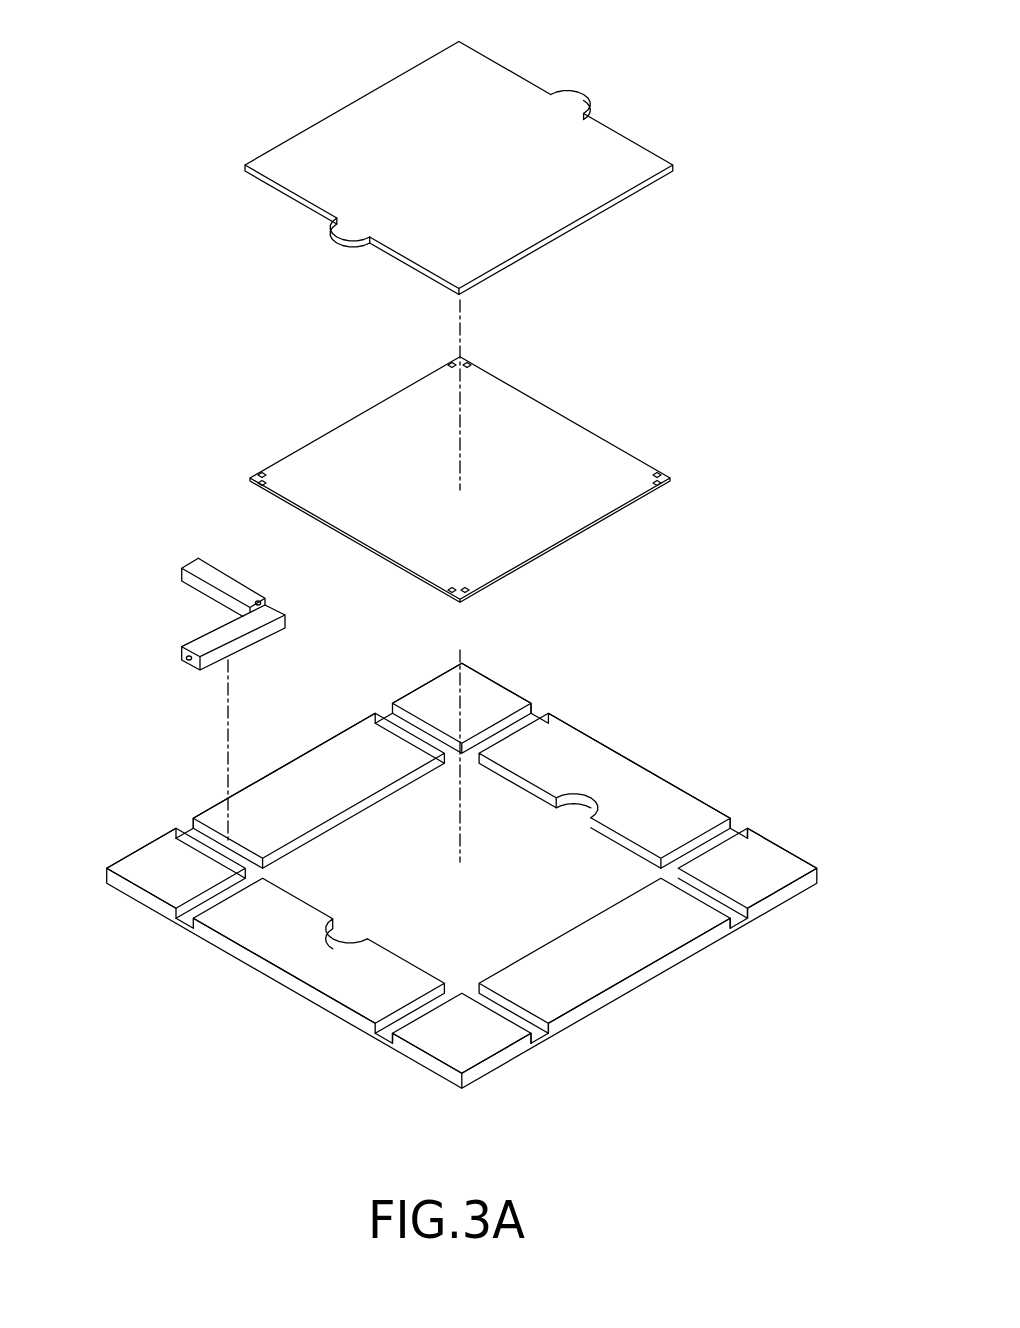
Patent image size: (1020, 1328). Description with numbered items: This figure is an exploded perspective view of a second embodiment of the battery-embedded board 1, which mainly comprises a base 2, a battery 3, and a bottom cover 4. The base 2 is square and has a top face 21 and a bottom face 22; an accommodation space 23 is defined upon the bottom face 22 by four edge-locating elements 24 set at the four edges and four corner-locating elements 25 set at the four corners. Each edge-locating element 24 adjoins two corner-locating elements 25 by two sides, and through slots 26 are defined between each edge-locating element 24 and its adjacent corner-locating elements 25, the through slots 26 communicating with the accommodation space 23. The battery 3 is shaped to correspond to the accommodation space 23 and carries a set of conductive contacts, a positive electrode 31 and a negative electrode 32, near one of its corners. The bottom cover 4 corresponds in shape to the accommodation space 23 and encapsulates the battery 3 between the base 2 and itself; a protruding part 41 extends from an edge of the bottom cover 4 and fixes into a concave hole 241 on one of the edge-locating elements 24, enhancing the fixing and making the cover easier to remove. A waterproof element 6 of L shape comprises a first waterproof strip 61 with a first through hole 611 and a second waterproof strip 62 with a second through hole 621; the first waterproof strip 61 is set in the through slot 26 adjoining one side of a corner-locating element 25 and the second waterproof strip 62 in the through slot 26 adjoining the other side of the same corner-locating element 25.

The battery-embedded board 1 is at (754, 311).
The base 2 is at (597, 1045).
The top face 21 is at (712, 952).
The bottom face 22 is at (660, 818).
The accommodation space 23 is at (512, 912).
The edge-locating element 24 is at (363, 748).
The concave hole 241 is at (577, 808).
The corner-locating element 25 is at (150, 865).
The through slot 26 is at (205, 840).
The battery 3 is at (585, 510).
The positive electrode 31 is at (258, 472).
The negative electrode 32 is at (252, 483).
The bottom cover 4 is at (570, 193).
The protruding part 41 is at (573, 102).
The waterproof element 6 is at (165, 588).
The first waterproof strip 61 is at (225, 582).
The first through hole 611 is at (260, 607).
The second waterproof strip 62 is at (212, 642).
The second through hole 621 is at (183, 660).